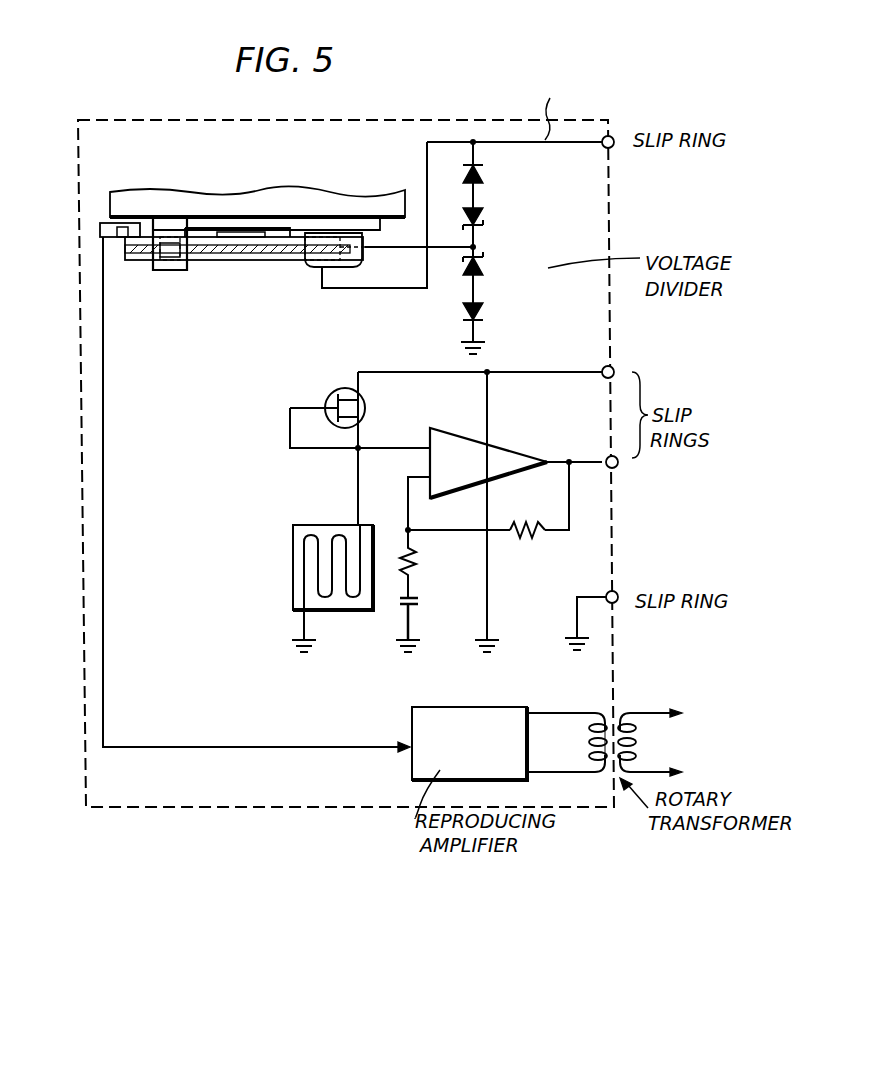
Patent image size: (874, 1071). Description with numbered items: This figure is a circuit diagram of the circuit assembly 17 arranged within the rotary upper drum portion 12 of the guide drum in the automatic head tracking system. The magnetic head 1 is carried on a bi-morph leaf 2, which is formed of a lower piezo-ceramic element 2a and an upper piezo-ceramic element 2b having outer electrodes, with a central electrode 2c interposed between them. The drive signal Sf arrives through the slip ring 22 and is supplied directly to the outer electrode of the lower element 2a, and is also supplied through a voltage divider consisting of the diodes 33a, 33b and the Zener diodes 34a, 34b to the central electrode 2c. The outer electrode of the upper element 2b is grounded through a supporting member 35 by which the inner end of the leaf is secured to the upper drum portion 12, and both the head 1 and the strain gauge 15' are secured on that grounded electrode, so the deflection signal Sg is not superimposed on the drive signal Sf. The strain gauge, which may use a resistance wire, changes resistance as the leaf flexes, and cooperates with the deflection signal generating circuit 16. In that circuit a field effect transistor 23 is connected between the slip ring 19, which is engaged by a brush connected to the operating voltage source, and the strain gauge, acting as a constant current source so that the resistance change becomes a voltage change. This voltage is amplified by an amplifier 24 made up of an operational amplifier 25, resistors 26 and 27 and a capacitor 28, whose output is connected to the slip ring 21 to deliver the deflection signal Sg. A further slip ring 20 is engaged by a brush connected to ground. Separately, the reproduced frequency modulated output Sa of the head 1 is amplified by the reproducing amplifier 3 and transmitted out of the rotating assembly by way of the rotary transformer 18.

The magnetic head 1 is at (117, 232).
The bi-morph leaf 2 is at (299, 234).
The lower piezo-ceramic element 2a is at (248, 262).
The upper piezo-ceramic element 2b is at (283, 260).
The central electrode 2c is at (345, 270).
The reproducing amplifier 3 is at (447, 722).
The upper drum portion 12 is at (292, 195).
The strain gauge 15' is at (238, 194).
The deflection signal generating circuit 16 is at (282, 571).
The circuit assembly 17 is at (208, 808).
The rotary transformer 18 is at (610, 720).
The slip ring 19 is at (615, 368).
The slip ring 20 is at (618, 592).
The slip ring 21 is at (290, 508).
The slip ring 22 is at (614, 138).
The field effect transistor 23 is at (334, 392).
The amplifier 24 is at (503, 475).
The operational amplifier 25 is at (449, 437).
The resistor 26 is at (545, 532).
The resistor 27 is at (420, 558).
The capacitor 28 is at (418, 600).
The diode 33a is at (485, 176).
The diode 33b is at (470, 318).
The Zener diode 34a is at (473, 220).
The Zener diode 34b is at (487, 268).
The supporting member 35 is at (340, 222).
The drive signal Sf is at (534, 105).
The deflection signal Sg is at (585, 462).
The reproduced output signal Sa is at (557, 712).